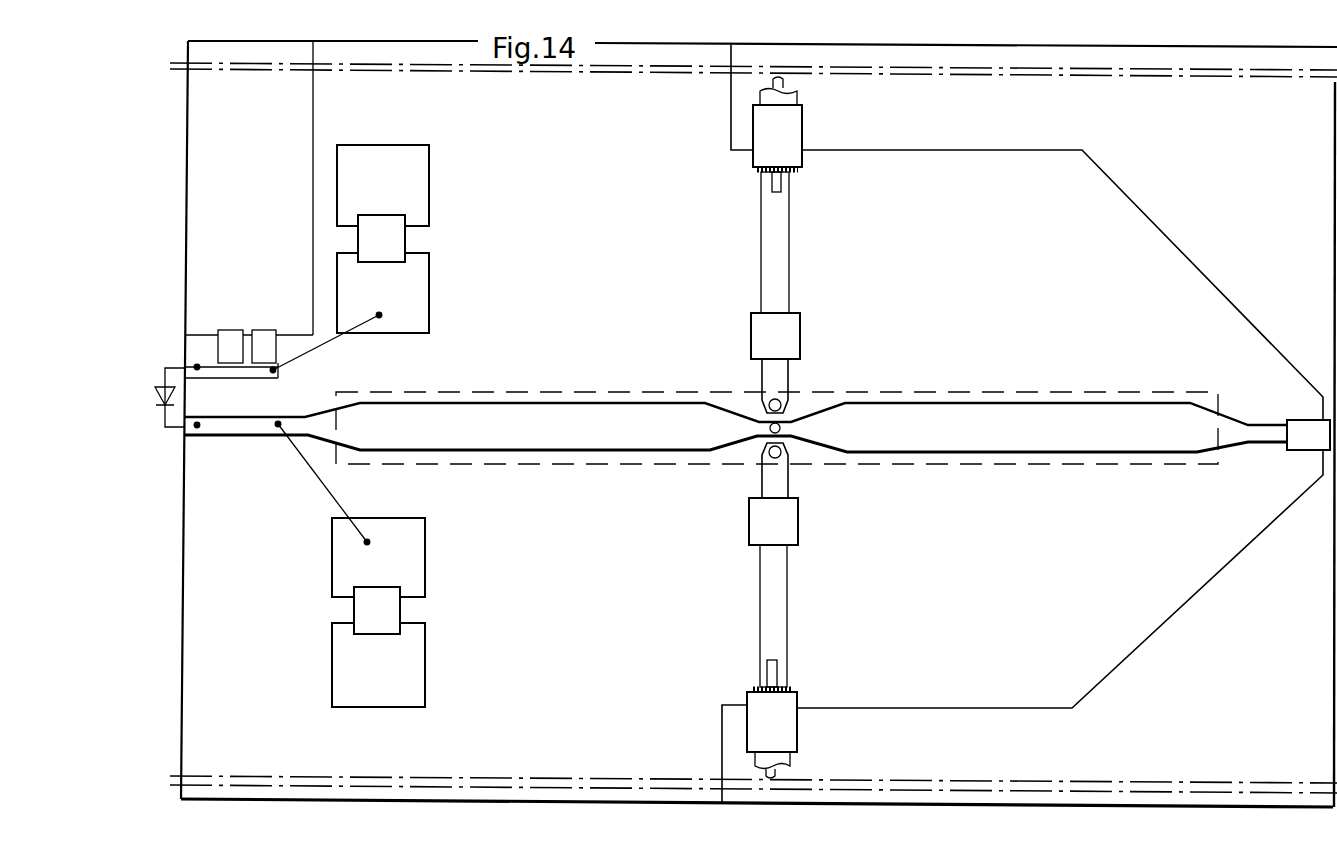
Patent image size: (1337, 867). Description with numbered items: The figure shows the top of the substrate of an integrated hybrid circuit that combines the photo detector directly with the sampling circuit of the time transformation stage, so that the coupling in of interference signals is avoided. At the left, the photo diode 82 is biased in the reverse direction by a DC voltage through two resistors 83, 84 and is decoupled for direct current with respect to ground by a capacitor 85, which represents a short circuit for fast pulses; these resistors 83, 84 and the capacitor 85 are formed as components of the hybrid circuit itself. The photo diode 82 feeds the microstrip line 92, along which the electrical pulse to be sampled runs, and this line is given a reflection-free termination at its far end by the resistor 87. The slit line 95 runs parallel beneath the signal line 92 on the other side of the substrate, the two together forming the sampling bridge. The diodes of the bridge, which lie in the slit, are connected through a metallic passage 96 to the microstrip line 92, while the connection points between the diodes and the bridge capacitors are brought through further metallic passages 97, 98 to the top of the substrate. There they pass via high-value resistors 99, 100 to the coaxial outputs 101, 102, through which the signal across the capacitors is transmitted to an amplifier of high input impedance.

The photo diode 82 is at (177, 396).
The resistor 83 is at (388, 610).
The resistor 84 is at (405, 237).
The capacitor 85 is at (263, 345).
The resistor 87 is at (1297, 430).
The microstrip line 92 is at (588, 415).
The slit line 95 is at (1005, 400).
The metallic passage 96 is at (782, 428).
The metallic passage 97 is at (762, 398).
The metallic passage 98 is at (782, 456).
The high-value resistor 99 is at (788, 336).
The high-value resistor 100 is at (790, 530).
The coaxial output 101 is at (792, 127).
The coaxial output 102 is at (785, 727).